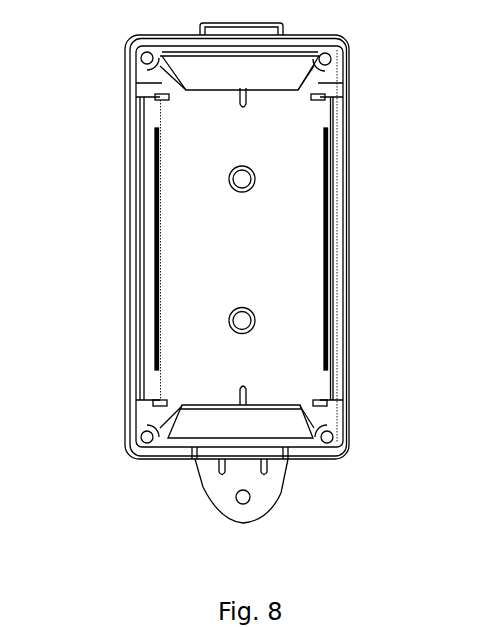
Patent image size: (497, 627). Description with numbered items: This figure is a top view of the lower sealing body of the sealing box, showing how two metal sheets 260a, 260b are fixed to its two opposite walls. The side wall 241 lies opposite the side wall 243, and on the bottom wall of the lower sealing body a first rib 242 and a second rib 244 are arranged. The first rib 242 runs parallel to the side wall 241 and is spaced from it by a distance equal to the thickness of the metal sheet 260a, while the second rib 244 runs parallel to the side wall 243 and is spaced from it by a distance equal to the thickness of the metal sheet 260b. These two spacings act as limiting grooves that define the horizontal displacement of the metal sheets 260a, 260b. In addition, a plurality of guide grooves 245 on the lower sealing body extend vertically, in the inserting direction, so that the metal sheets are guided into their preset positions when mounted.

The side wall 241 is at (133, 123).
The first rib 242 is at (158, 243).
The side wall 243 is at (338, 110).
The second rib 244 is at (323, 203).
The guide grooves 245 is at (140, 78).
The metal sheet 260a is at (150, 185).
The metal sheet 260b is at (330, 162).